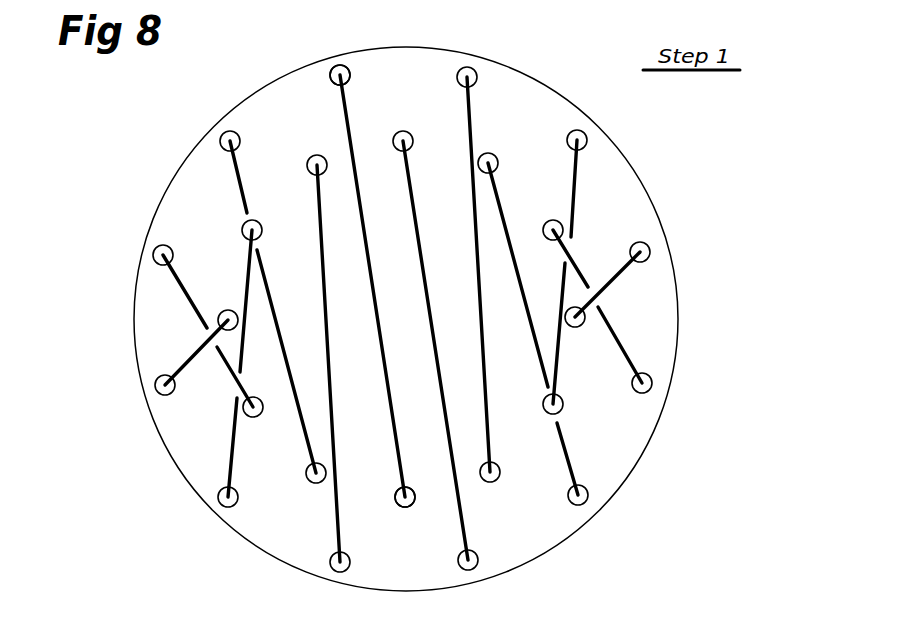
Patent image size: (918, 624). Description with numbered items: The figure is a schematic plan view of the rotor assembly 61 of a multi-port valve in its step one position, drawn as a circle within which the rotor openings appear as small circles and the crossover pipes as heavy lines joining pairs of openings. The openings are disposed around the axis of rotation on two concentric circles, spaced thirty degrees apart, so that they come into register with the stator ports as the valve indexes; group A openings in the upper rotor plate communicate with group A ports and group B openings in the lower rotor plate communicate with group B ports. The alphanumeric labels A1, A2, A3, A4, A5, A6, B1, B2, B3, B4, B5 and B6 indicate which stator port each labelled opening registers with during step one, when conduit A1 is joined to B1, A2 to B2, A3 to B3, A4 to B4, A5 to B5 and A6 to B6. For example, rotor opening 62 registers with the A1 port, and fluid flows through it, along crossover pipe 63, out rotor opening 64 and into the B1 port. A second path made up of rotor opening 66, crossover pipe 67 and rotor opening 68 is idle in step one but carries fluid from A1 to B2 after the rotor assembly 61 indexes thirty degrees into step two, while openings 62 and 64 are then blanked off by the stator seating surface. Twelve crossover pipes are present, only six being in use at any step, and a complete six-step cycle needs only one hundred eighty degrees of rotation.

The rotor assembly 61 is at (463, 319).
The rotor opening 62 is at (316, 89).
The crossover pipe 63 is at (377, 286).
The rotor opening 64 is at (381, 482).
The rotor opening 66 is at (489, 90).
The crossover pipe 67 is at (455, 274).
The rotor opening 68 is at (512, 486).
The group A rotor opening label A1 is at (314, 56).
The group A rotor opening label A2 is at (603, 126).
The group A rotor opening label A3 is at (665, 396).
The group A rotor opening label A4 is at (492, 546).
The group A rotor opening label A5 is at (250, 511).
The group A rotor opening label A6 is at (182, 243).
The group B rotor opening label B1 is at (385, 512).
The group B rotor opening label B2 is at (576, 417).
The group B rotor opening label B3 is at (537, 213).
The group B rotor opening label B4 is at (424, 122).
The group B rotor opening label B5 is at (273, 214).
The group B rotor opening label B6 is at (269, 430).